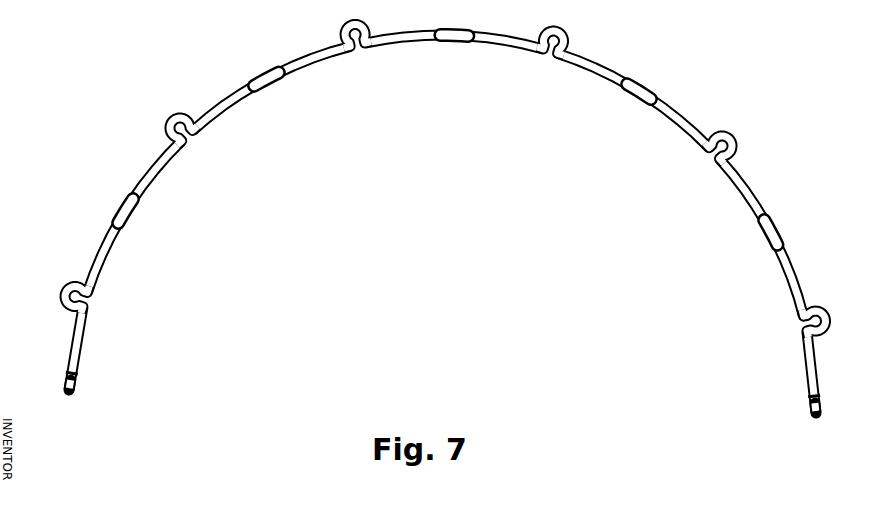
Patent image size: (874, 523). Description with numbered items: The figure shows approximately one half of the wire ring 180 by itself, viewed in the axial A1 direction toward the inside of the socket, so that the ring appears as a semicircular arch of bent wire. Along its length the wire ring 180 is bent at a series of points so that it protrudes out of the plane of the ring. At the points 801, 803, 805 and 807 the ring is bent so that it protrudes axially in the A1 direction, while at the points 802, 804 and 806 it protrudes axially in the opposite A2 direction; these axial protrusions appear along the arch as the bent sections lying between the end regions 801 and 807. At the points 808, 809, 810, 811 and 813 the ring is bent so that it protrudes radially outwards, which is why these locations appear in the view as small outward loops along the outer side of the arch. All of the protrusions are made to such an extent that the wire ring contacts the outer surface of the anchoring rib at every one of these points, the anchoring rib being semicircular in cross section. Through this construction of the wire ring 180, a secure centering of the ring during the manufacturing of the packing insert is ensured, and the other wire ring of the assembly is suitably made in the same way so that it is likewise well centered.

The wire ring 180 is at (662, 80).
The axial bend point 801 is at (76, 383).
The axial bend point 802 is at (128, 208).
The axial bend point 803 is at (268, 80).
The axial bend point 804 is at (457, 38).
The axial bend point 805 is at (640, 92).
The axial bend point 806 is at (770, 228).
The axial bend point 807 is at (810, 400).
The radial bend point 808 is at (80, 296).
The radial bend point 809 is at (188, 128).
The radial bend point 810 is at (355, 33).
The radial bend point 811 is at (553, 36).
The radial bend point 813 is at (805, 315).